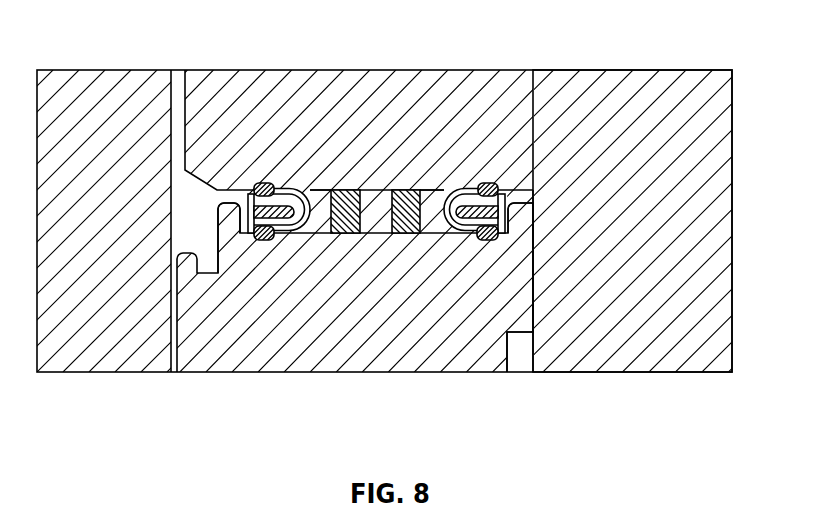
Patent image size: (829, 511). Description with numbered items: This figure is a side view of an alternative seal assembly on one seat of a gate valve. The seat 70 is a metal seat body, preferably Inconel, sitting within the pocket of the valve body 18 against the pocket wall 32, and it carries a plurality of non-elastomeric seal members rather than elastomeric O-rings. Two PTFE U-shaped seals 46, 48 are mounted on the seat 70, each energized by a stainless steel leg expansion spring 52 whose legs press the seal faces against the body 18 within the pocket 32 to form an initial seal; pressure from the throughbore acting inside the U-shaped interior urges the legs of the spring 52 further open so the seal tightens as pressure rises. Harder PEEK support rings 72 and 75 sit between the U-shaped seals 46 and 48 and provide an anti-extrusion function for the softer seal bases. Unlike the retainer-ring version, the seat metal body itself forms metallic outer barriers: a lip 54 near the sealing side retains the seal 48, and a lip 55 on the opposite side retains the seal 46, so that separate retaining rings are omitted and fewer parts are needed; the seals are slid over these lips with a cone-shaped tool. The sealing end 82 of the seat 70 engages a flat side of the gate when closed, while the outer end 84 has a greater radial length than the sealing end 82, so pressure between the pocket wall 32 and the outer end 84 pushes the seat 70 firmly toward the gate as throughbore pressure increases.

The valve body 18 is at (717, 155).
The pocket wall 32 is at (530, 265).
The U-shaped seal 46 is at (487, 185).
The U-shaped seal 48 is at (259, 186).
The leg expansion spring 52 is at (331, 189).
The lip 54 is at (213, 232).
The lip 55 is at (520, 220).
The seat 70 is at (354, 360).
The support ring 72 is at (337, 237).
The support ring 75 is at (404, 237).
The sealing end 82 is at (177, 355).
The outer end 84 is at (533, 305).